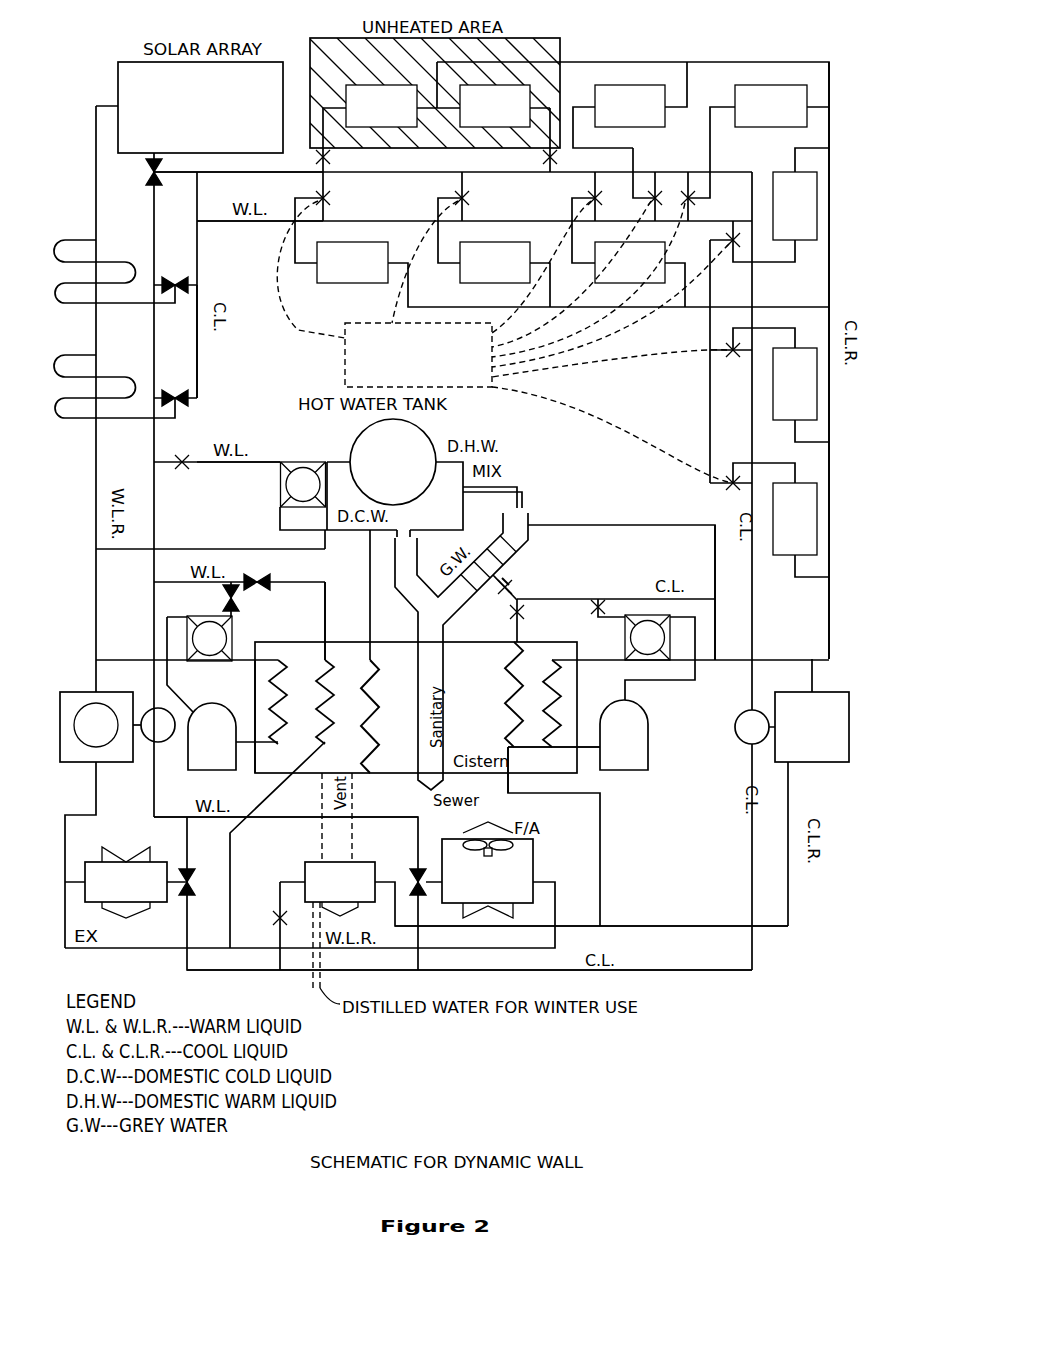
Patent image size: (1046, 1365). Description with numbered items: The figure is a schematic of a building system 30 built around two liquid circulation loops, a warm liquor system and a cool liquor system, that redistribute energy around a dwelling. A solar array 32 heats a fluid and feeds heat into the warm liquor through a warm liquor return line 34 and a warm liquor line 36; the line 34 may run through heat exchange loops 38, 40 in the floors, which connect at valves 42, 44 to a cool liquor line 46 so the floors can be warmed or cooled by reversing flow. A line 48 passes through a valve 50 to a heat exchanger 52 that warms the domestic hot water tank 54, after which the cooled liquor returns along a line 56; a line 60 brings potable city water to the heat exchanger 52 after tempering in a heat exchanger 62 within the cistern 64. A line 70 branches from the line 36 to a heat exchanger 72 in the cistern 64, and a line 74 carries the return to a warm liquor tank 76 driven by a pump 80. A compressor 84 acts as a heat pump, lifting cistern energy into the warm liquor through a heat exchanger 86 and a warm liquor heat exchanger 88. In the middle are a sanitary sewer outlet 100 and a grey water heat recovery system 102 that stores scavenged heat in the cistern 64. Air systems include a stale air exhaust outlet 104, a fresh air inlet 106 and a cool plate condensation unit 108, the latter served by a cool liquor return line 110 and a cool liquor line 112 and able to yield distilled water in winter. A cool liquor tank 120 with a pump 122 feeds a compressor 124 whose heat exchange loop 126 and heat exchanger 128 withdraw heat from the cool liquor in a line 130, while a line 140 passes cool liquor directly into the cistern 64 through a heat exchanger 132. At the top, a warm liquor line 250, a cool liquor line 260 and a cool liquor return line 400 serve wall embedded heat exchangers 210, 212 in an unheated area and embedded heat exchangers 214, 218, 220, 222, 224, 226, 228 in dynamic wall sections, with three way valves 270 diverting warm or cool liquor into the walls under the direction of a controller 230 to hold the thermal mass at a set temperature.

The building system 30 is at (789, 943).
The solar array 32 is at (200, 107).
The warm liquor return line 34 is at (96, 178).
The warm liquor line 36 is at (146, 166).
The heat exchange loop 38 is at (114, 264).
The heat exchange loop 40 is at (114, 379).
The valve 42 is at (175, 283).
The valve 44 is at (175, 396).
The cool liquor line 46 is at (196, 340).
The line 48 is at (254, 461).
The valve 50 is at (184, 458).
The heat exchanger 52 is at (303, 484).
The domestic hot water tank 54 is at (437, 420).
The line 56 is at (193, 548).
The line 60 is at (416, 692).
The heat exchanger 62 is at (336, 686).
The cistern 64 is at (515, 694).
The line 70 is at (288, 692).
The heat exchanger 72 is at (318, 712).
The line 74 is at (252, 815).
The warm liquor tank 76 is at (90, 697).
The pump 80 is at (170, 743).
The compressor 84 is at (219, 718).
The heat exchanger 86 is at (279, 715).
The warm liquor heat exchanger 88 is at (228, 617).
The sanitary sewer outlet 100 is at (388, 716).
The grey water heat recovery system 102 is at (513, 570).
The stale air exhaust outlet 104 is at (140, 882).
The fresh air inlet 106 is at (471, 870).
The cool plate condensation unit 108 is at (324, 893).
The cool liquor return line 110 is at (644, 926).
The cool liquor line 112 is at (662, 970).
The cool liquor tank 120 is at (818, 755).
The pump 122 is at (736, 733).
The compressor 124 is at (610, 716).
The heat exchange loop 126 is at (548, 730).
The heat exchanger 128 is at (630, 630).
The cool liquor line 130 is at (734, 658).
The heat exchanger 132 is at (522, 686).
The line 140 is at (550, 599).
The wall embedded heat exchanger 210 is at (381, 106).
The wall embedded heat exchanger 212 is at (495, 184).
The embedded heat exchanger 214 is at (352, 262).
The embedded heat exchanger 218 is at (630, 262).
The embedded heat exchanger 220 is at (630, 106).
The embedded heat exchanger 222 is at (771, 106).
The embedded heat exchanger 224 is at (795, 206).
The embedded heat exchanger 226 is at (795, 384).
The embedded heat exchanger 228 is at (795, 519).
The controller 230 is at (470, 392).
The warm liquor line 250 is at (210, 220).
The cool liquor line 260 is at (252, 174).
The three way valve 270 is at (330, 197).
The cool liquor return line 400 is at (830, 252).